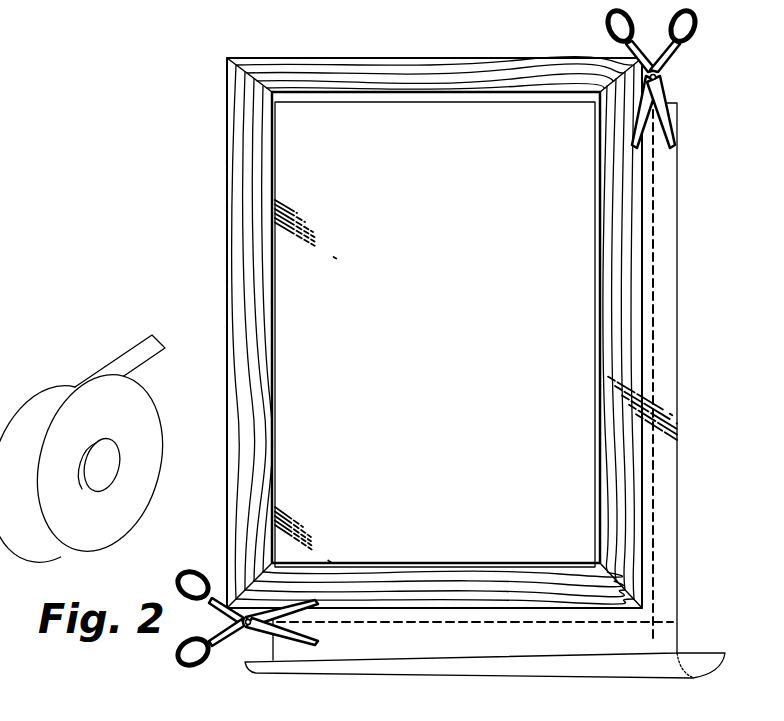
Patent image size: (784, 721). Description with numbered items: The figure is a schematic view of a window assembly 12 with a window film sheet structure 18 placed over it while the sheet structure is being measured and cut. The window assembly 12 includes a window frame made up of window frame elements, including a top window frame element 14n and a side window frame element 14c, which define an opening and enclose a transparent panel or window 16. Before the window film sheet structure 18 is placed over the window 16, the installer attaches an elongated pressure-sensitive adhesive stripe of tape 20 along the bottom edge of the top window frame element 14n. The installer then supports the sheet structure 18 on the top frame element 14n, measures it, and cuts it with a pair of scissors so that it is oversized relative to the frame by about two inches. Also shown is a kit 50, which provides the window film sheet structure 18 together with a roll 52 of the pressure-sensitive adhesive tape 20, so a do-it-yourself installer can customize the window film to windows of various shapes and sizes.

The kit 50 is at (364, 342).
The window assembly 12 is at (223, 190).
The top window frame element 14n is at (385, 68).
The window frame element 14c is at (232, 294).
The transparent panel 16 is at (452, 340).
The window film sheet structure 18 is at (500, 423).
The pressure-sensitive adhesive tape 20 is at (467, 98).
The roll 52 is at (143, 407).